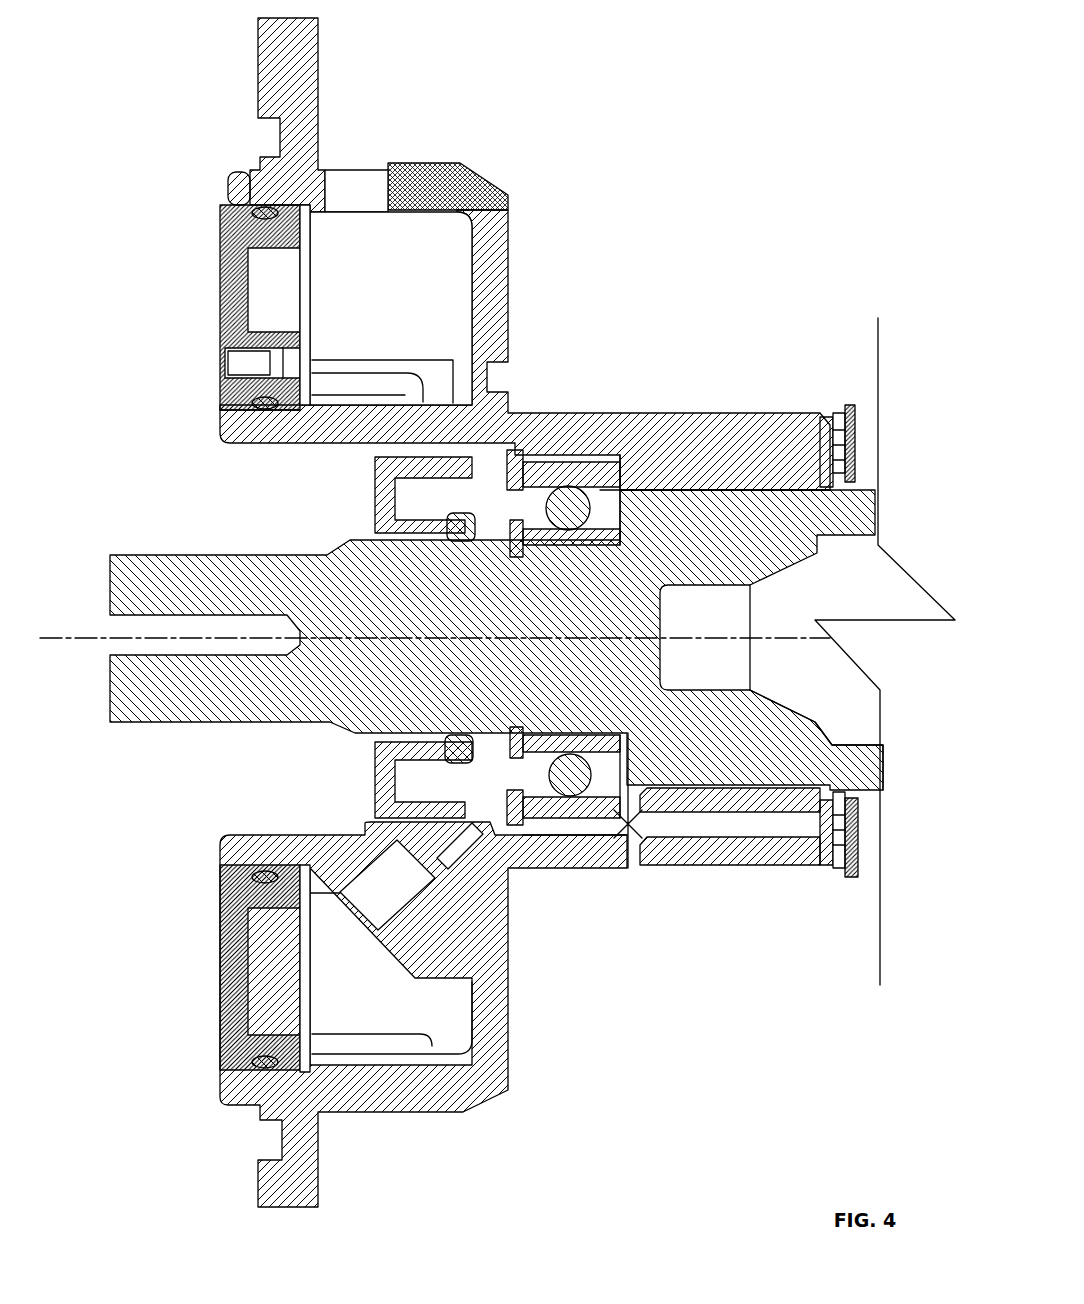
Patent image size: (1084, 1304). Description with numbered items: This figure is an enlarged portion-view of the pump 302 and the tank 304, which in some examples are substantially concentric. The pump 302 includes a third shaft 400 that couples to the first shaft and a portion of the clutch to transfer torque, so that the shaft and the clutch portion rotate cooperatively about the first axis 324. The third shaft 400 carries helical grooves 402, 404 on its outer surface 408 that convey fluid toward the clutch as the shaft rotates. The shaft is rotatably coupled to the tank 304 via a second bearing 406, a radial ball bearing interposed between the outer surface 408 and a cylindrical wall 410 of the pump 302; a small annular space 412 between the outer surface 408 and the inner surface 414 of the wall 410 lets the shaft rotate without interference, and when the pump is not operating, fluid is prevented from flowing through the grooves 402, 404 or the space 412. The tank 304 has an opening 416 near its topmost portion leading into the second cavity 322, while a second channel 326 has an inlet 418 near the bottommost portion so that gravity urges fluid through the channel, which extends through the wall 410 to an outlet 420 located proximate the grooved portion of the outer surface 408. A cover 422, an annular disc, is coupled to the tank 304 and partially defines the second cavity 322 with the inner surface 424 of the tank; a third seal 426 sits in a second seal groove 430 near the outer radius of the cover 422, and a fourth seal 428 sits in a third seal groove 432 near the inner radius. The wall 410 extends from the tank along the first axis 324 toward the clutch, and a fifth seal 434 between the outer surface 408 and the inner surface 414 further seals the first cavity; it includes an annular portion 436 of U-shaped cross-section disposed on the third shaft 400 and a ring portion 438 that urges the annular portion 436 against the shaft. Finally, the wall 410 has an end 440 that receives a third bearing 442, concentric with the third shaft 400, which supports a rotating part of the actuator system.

The pump 302 is at (840, 325).
The tank 304 is at (513, 195).
The second cavity 322 is at (426, 234).
The first axis 324 is at (48, 636).
The second channel 326 is at (572, 825).
The third shaft 400 is at (432, 620).
The groove 402 is at (697, 488).
The groove 404 is at (770, 488).
The second bearing 406 is at (617, 497).
The outer surface 408 is at (863, 796).
The wall 410 is at (727, 867).
The space 412 is at (548, 488).
The inner surface 414 is at (815, 728).
The opening 416 is at (352, 190).
The inlet 418 is at (362, 918).
The outlet 420 is at (637, 788).
The cover 422 is at (222, 925).
The inner surface 424 is at (480, 300).
The third seal 426 is at (236, 196).
The fourth seal 428 is at (235, 415).
The second seal groove 430 is at (240, 229).
The third seal groove 432 is at (240, 381).
The fifth seal 434 is at (365, 522).
The annular portion 436 is at (378, 803).
The ring portion 438 is at (472, 758).
The end 440 is at (826, 872).
The third bearing 442 is at (858, 880).